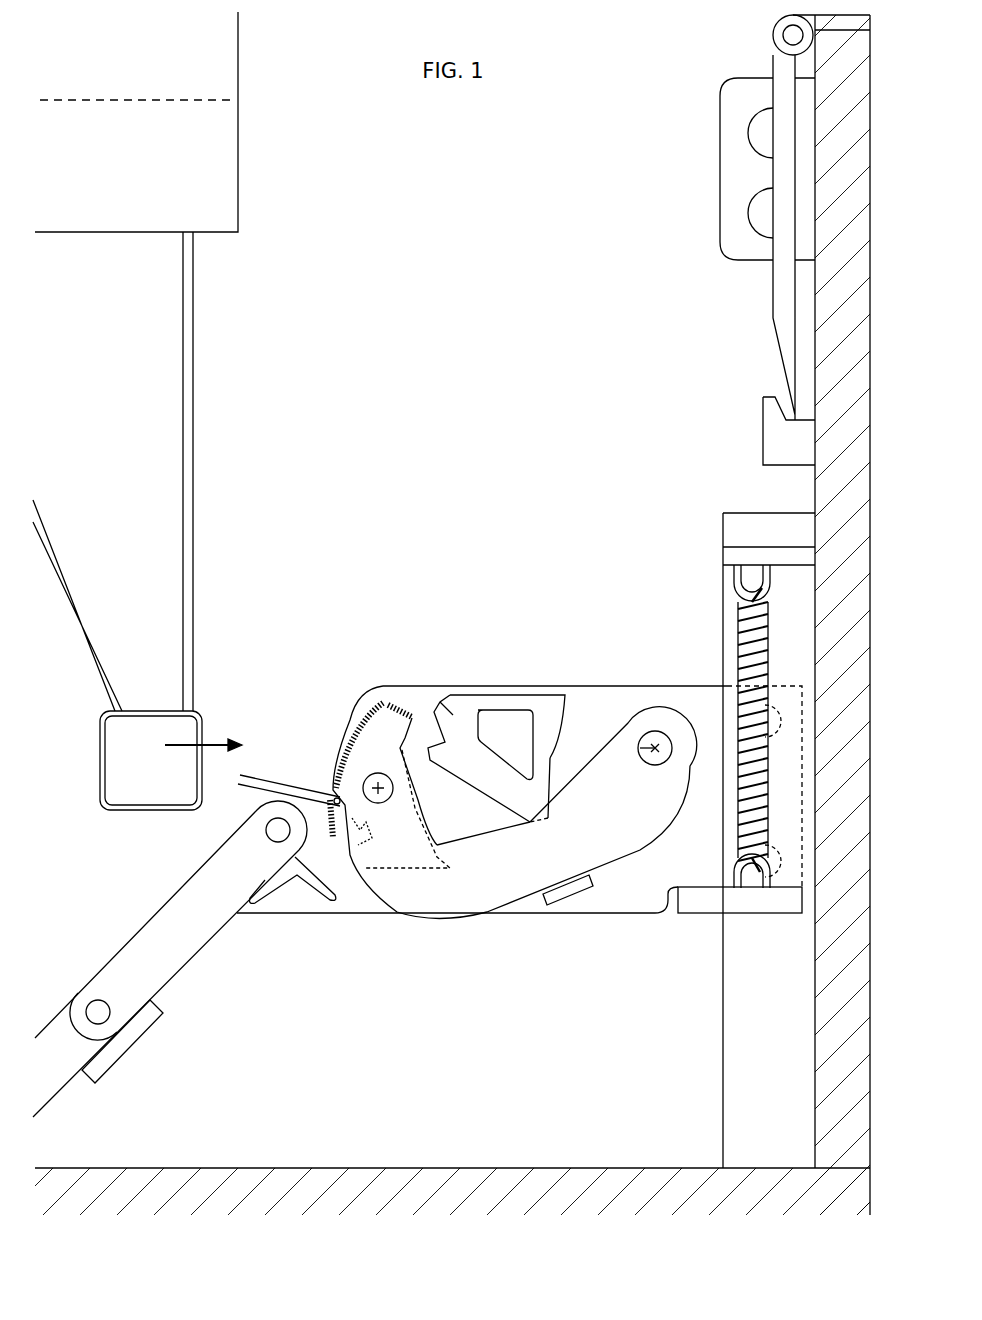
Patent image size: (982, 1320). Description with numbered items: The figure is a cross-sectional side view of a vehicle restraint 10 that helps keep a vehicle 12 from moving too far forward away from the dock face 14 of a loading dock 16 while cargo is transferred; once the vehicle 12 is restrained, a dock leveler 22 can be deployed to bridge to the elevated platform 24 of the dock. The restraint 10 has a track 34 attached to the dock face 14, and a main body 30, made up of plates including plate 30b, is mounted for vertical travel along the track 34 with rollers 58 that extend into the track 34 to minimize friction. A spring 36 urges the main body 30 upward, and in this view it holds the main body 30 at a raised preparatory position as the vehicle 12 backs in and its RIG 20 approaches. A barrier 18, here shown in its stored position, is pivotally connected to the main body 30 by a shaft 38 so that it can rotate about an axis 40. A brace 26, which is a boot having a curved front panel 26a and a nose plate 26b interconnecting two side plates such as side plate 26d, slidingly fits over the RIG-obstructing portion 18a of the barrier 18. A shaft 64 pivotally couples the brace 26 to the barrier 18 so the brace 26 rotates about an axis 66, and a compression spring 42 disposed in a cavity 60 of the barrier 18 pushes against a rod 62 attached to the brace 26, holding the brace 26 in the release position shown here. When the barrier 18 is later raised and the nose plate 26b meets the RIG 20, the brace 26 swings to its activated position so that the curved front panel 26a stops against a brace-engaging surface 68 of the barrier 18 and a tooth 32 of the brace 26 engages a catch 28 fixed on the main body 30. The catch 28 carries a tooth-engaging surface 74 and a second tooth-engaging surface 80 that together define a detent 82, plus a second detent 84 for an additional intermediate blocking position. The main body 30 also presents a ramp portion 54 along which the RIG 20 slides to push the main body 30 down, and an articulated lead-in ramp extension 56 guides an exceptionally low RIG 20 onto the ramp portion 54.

The vehicle restraint 10 is at (362, 517).
The vehicle 12 is at (240, 181).
The dock face 14 is at (815, 1050).
The loading dock 16 is at (543, 1043).
The barrier 18 is at (610, 875).
The RIG-obstructing portion 18a is at (330, 795).
The RIG 20 is at (95, 758).
The dock leveler 22 is at (773, 34).
The elevated platform 24 is at (850, 24).
The brace 26 is at (352, 715).
The curved front panel 26a is at (328, 718).
The nose plate 26b is at (392, 705).
The side plate 26d is at (347, 862).
The catch 28 is at (515, 695).
The main body 30 is at (614, 690).
The plate 30b is at (578, 720).
The tooth 32 is at (450, 868).
The track 34 is at (722, 1105).
The spring 36 is at (755, 655).
The shaft 38 is at (660, 733).
The axis 40 is at (650, 750).
The compression spring 42 is at (420, 818).
The ramp portion 54 is at (345, 730).
The lead-in ramp extension 56 is at (150, 925).
The rollers 58 is at (770, 886).
The cavity 60 is at (370, 832).
The rod 62 is at (330, 802).
The shaft 64 is at (378, 773).
The axis 66 is at (395, 780).
The brace-engaging surface 68 is at (337, 845).
The tooth-engaging surface 74 is at (435, 717).
The second tooth-engaging surface 80 is at (447, 698).
The detent 82 is at (443, 712).
The second detent 84 is at (422, 717).